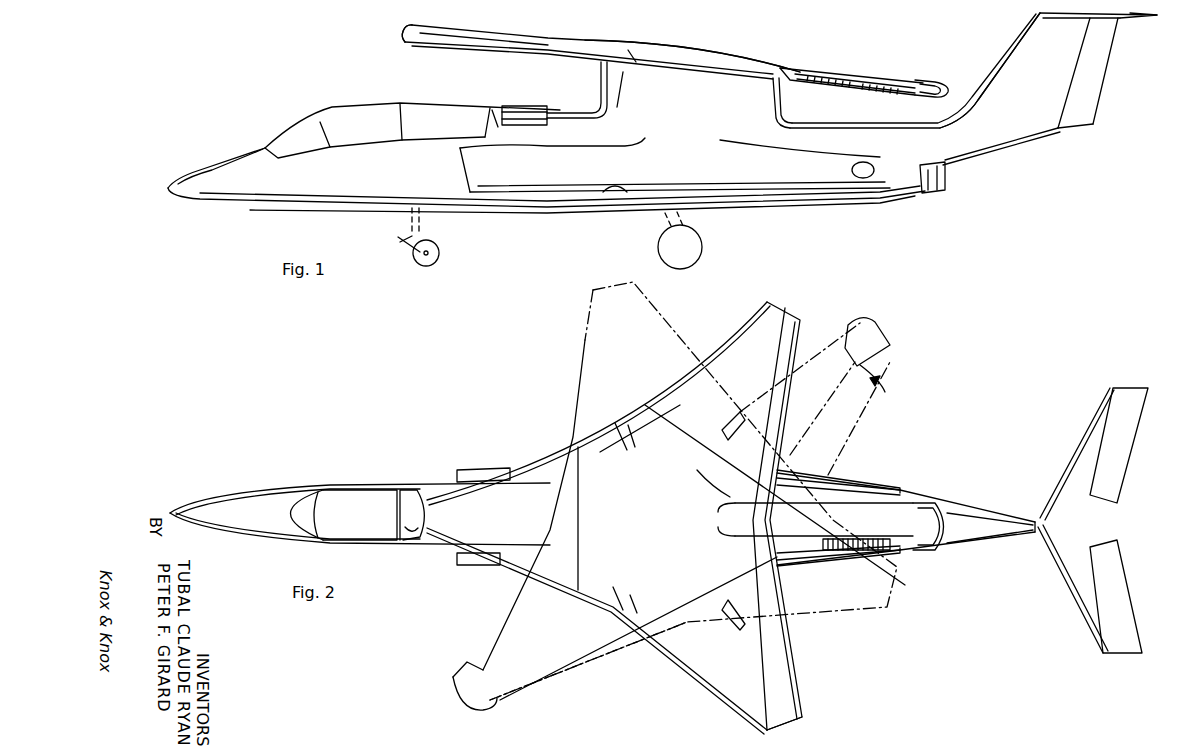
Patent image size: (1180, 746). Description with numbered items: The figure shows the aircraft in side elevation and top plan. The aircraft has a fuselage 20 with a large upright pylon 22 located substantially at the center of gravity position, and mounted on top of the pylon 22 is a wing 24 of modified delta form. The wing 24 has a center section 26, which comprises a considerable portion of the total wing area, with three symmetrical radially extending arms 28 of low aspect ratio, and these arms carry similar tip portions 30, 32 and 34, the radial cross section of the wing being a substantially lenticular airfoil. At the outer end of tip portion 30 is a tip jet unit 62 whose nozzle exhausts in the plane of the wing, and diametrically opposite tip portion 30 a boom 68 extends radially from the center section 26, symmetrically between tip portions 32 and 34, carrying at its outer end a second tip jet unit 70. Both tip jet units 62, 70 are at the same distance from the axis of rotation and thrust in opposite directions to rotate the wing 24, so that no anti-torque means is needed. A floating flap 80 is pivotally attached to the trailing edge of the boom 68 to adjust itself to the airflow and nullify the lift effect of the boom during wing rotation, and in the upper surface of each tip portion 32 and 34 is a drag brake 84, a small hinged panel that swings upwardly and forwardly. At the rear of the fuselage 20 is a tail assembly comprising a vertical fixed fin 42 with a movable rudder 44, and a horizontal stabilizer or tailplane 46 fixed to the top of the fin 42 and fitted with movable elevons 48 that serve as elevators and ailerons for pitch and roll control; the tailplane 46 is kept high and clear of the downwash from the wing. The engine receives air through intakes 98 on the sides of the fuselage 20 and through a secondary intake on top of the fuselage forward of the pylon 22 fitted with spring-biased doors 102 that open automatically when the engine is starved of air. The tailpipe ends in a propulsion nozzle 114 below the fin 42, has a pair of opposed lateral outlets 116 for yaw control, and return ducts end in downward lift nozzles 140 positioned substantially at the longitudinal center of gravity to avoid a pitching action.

In FIG. 1, the fuselage 20 is at (540, 208).
In FIG. 2, the fuselage 20 is at (345, 485).
In FIG. 1, the pylon 22 is at (600, 80).
In FIG. 1, the wing 24 is at (722, 60).
In FIG. 2, the wing 24 is at (551, 446).
In FIG. 1, the center section 26 is at (660, 40).
In FIG. 2, the center section 26 is at (622, 430).
In FIG. 2, the arms 28 is at (645, 400).
In FIG. 1, the tip portion 30 is at (500, 40).
In FIG. 2, the tip portion 30 is at (478, 468).
In FIG. 2, the tip portion 32 is at (586, 340).
In FIG. 1, the tip portion 34 is at (782, 82).
In FIG. 2, the tip portion 34 is at (752, 712).
In FIG. 1, the vertical fixed fin 42 is at (1005, 42).
In FIG. 2, the vertical fixed fin 42 is at (1022, 530).
In FIG. 1, the rudder 44 is at (1094, 112).
In FIG. 1, the horizontal stabilizer or tailplane 46 is at (1038, 13).
In FIG. 2, the horizontal stabilizer or tailplane 46 is at (1082, 440).
In FIG. 1, the elevons 48 is at (1128, 19).
In FIG. 2, the elevons 48 is at (1128, 447).
In FIG. 1, the tip jet unit 62 is at (398, 33).
In FIG. 2, the tip jet unit 62 is at (410, 492).
In FIG. 1, the boom 68 is at (828, 70).
In FIG. 2, the boom 68 is at (836, 345).
In FIG. 1, the tip jet unit 70 is at (934, 78).
In FIG. 2, the tip jet unit 70 is at (870, 328).
In FIG. 1, the floating flap 80 is at (882, 85).
In FIG. 2, the floating flap 80 is at (830, 420).
In FIG. 2, the drag brake 84 is at (738, 412).
In FIG. 1, the air intakes 98 is at (462, 170).
In FIG. 2, the air intakes 98 is at (458, 470).
In FIG. 1, the doors 102 is at (520, 106).
In FIG. 1, the propulsion nozzle 114 is at (940, 194).
In FIG. 1, the lateral outlets 116 is at (874, 165).
In FIG. 2, the lateral outlets 116 is at (855, 485).
In FIG. 1, the lift nozzles 140 is at (616, 194).